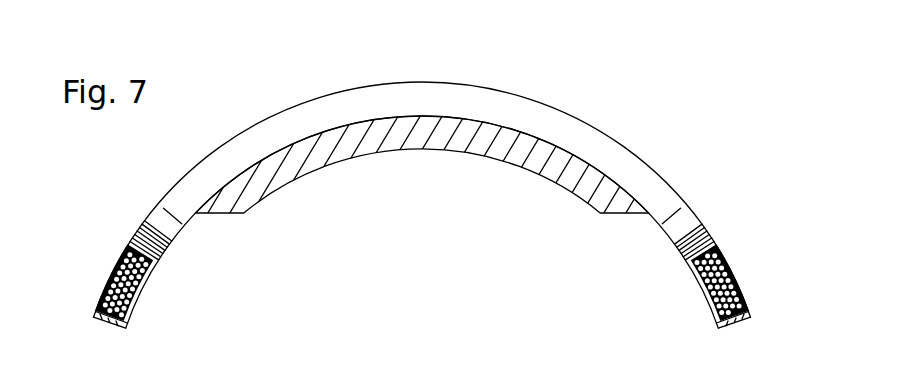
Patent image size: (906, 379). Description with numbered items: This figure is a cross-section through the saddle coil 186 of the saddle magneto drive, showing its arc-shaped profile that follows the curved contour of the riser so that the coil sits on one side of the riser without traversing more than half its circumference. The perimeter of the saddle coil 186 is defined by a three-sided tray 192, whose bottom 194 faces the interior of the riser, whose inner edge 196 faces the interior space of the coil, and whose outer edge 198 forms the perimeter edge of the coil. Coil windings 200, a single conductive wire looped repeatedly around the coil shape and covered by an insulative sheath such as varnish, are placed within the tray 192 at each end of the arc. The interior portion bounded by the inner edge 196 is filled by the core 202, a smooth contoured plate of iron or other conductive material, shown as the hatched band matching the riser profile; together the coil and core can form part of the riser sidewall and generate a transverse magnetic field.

The saddle coil 186 is at (706, 116).
The core 202 is at (380, 132).
The inner edge 196 is at (135, 243).
The bottom 194 is at (140, 292).
The outer edge 198 is at (108, 327).
The coil windings 200 is at (727, 260).
The tray 192 is at (695, 324).